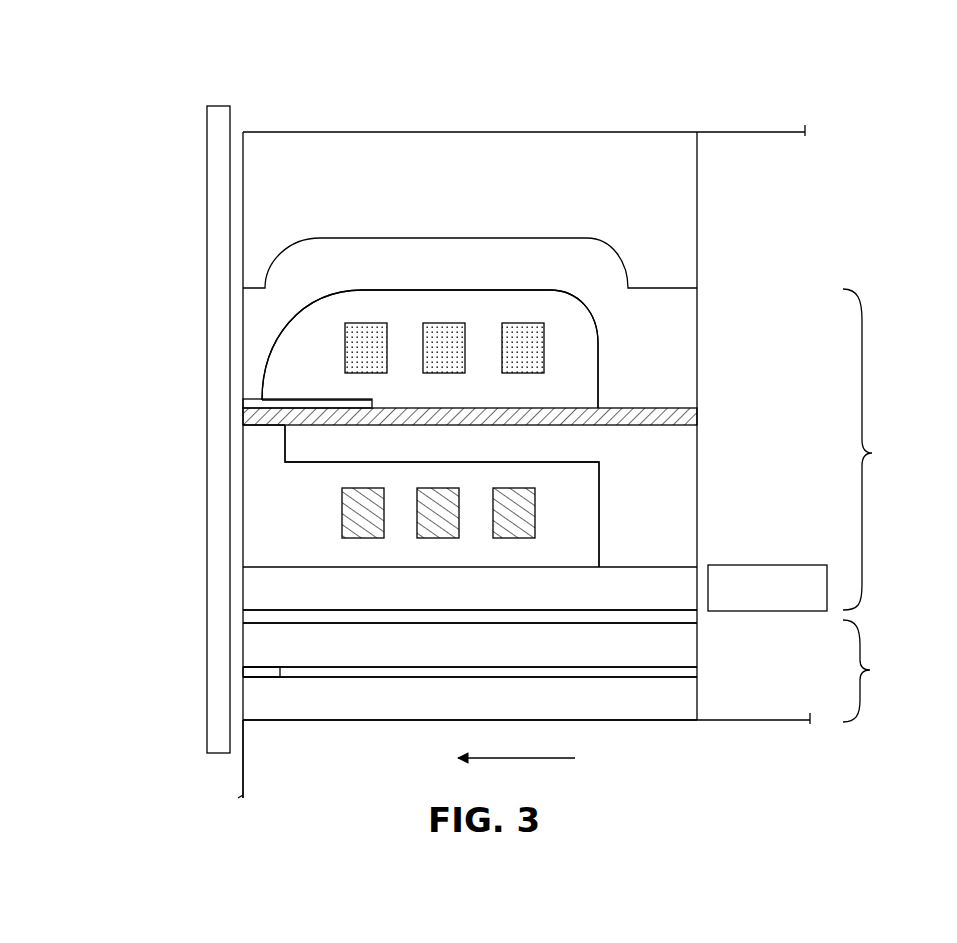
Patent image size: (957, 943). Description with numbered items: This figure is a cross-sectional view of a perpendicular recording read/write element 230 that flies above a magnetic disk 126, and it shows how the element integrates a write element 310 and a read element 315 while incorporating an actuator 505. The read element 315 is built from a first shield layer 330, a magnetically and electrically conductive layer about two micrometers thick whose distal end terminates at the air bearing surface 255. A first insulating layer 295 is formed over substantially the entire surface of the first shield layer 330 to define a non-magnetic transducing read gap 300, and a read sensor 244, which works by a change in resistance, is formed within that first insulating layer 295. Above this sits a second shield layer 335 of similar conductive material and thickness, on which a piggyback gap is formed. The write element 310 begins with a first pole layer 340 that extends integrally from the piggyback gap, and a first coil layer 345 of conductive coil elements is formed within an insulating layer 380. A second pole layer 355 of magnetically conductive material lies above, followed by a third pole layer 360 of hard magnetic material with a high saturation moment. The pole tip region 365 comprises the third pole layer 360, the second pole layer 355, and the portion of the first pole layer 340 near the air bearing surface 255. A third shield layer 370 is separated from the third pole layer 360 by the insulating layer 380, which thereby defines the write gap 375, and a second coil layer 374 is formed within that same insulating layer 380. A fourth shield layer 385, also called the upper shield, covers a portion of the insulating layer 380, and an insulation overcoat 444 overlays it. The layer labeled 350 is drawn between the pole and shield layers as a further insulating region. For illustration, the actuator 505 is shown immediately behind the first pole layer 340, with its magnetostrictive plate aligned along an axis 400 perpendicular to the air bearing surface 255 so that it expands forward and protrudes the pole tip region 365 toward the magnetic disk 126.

The read/write element 230 is at (476, 82).
The magnetic disk 126 is at (207, 177).
The insulation overcoat 444 is at (475, 199).
The fourth shield layer (S4) 385 is at (497, 276).
The third shield layer (S3) 370 is at (252, 337).
The insulating layer (I3/I4) 380 is at (313, 359).
The second coil layer 374 is at (420, 345).
The write gap 375 is at (243, 404).
The third pole layer (P3) 360 is at (697, 422).
The pole tip region 365 is at (223, 432).
The second pole layer (P2) 355 is at (510, 456).
The first coil layer 345 is at (330, 495).
The first pole layer (P1) 340 is at (511, 599).
The actuator 505 is at (785, 599).
The second insulation layer I2 350 is at (697, 618).
The second shield layer (S2) 335 is at (511, 654).
The first insulating layer (I1) 295 is at (697, 672).
The read sensor 244 is at (250, 672).
The read gap 300 is at (238, 668).
The first shield layer (S1) 330 is at (511, 709).
The air bearing surface (ABS) 255 is at (243, 790).
The axis 400 is at (516, 745).
The write element 310 is at (882, 449).
The read element 315 is at (877, 671).